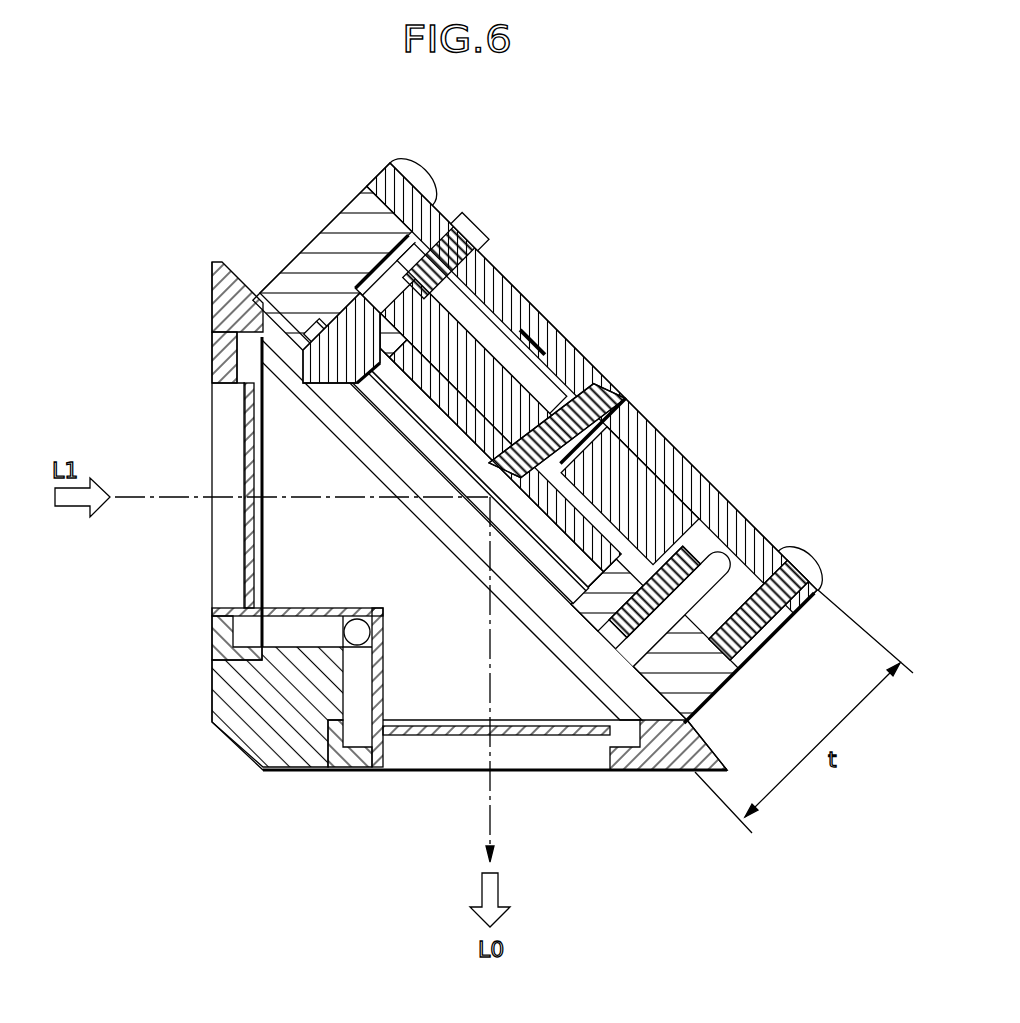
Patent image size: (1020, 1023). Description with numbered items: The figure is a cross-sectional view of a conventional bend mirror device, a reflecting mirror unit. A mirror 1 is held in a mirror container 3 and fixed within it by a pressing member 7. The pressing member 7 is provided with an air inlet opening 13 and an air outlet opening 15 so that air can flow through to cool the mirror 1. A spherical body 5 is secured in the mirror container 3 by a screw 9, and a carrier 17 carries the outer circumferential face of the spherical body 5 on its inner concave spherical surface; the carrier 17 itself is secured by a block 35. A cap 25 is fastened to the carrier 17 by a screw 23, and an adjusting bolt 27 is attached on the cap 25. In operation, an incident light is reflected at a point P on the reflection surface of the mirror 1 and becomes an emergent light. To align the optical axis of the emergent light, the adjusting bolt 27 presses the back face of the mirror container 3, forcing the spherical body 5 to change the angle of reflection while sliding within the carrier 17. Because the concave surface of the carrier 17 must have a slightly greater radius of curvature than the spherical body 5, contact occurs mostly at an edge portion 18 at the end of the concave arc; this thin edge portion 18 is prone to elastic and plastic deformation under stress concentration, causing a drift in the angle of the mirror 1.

The mirror 1 is at (430, 433).
The mirror container 3 is at (377, 393).
The spherical body 5 is at (322, 348).
The pressing member 7 is at (473, 357).
The screw 9 is at (700, 550).
The air inlet opening 13 is at (597, 380).
The air outlet opening 15 is at (533, 335).
The carrier 17 is at (325, 248).
The edge portion 18 is at (258, 372).
The screw 23 is at (420, 173).
The cap 25 is at (693, 463).
The adjusting bolt 27 is at (462, 238).
The block 35 is at (214, 725).
The point on reflection surface P is at (490, 497).